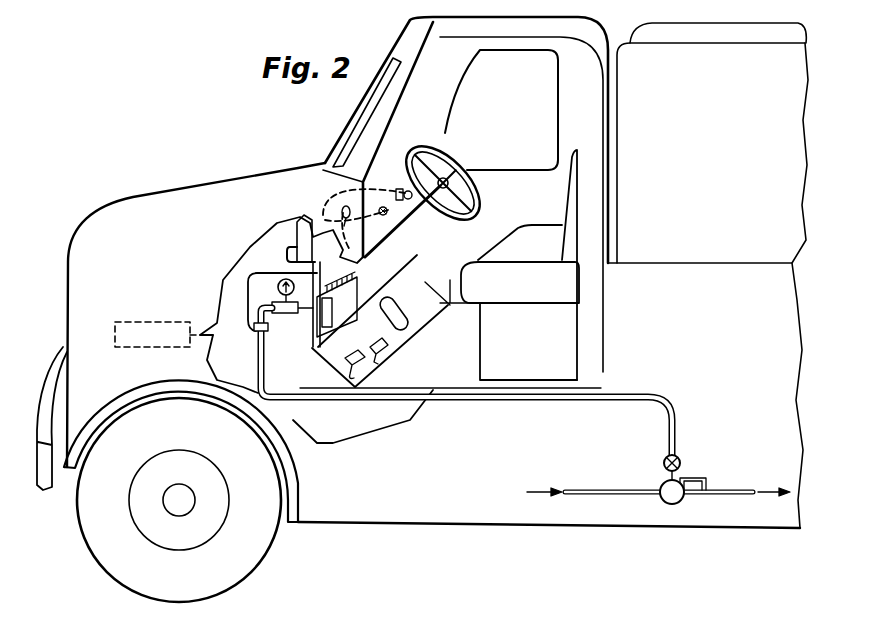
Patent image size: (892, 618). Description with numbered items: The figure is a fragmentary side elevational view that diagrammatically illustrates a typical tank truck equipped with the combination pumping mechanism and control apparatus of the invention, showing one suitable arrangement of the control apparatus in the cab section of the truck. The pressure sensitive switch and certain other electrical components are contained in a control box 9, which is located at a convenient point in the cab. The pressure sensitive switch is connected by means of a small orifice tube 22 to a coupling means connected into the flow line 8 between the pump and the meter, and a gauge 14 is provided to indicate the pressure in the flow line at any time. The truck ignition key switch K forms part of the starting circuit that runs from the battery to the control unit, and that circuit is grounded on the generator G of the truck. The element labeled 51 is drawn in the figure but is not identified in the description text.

The gauge 14 is at (283, 280).
The generator G is at (160, 322).
The truck ignition key switch K is at (406, 190).
The control valve 51 is at (390, 222).
The control box 9 is at (380, 321).
The small orifice tube 22 is at (642, 404).
The flow line 8 is at (745, 490).